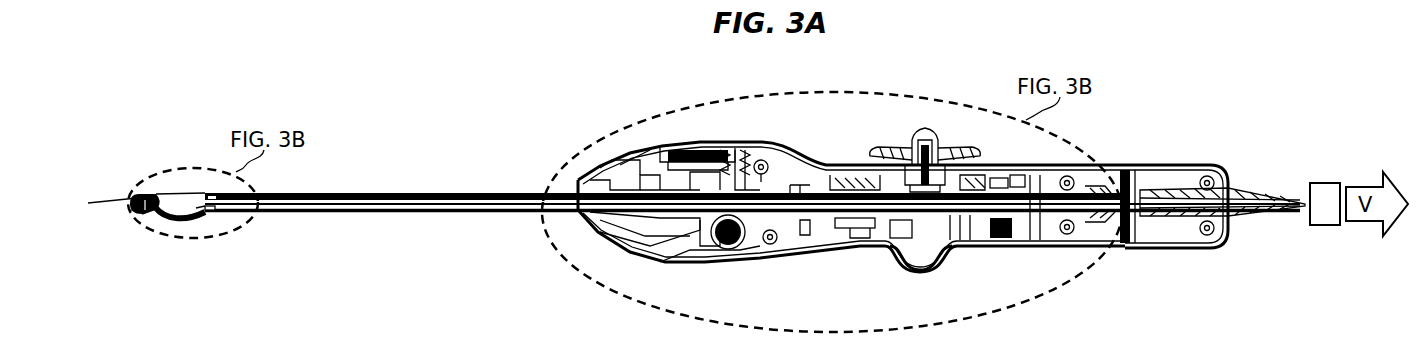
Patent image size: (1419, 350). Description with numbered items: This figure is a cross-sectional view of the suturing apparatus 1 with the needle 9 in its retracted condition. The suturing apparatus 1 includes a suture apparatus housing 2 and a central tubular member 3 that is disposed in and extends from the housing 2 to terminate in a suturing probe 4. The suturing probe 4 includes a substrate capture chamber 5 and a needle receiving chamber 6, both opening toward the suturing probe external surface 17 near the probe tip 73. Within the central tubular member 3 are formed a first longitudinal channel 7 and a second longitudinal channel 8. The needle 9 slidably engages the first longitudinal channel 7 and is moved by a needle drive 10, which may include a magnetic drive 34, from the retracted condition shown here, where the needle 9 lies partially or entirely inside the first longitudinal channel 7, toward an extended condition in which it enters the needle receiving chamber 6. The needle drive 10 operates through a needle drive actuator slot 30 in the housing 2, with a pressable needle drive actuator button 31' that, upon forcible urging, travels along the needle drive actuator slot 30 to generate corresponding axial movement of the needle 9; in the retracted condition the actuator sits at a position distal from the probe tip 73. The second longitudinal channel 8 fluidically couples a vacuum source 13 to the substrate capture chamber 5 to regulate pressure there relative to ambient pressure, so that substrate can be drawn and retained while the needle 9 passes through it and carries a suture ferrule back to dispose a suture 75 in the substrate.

The suturing apparatus 1 is at (380, 99).
The suture apparatus housing 2 is at (1147, 157).
The central tubular member 3 is at (461, 186).
The suturing probe 4 is at (146, 226).
The substrate capture chamber 5 is at (200, 228).
The needle receiving chamber 6 is at (146, 182).
The first longitudinal channel 7 is at (177, 208).
The second longitudinal channel 8 is at (216, 214).
The needle 9 is at (345, 193).
The needle drive 10 is at (1038, 308).
The vacuum source 13 is at (1325, 204).
The suturing probe external surface 17 is at (170, 230).
The needle drive actuator slot 30 is at (849, 155).
The needle drive actuator button 31' is at (925, 118).
The magnetic drive 34 is at (1000, 270).
The probe tip 73 is at (129, 211).
The suture 75 is at (88, 203).